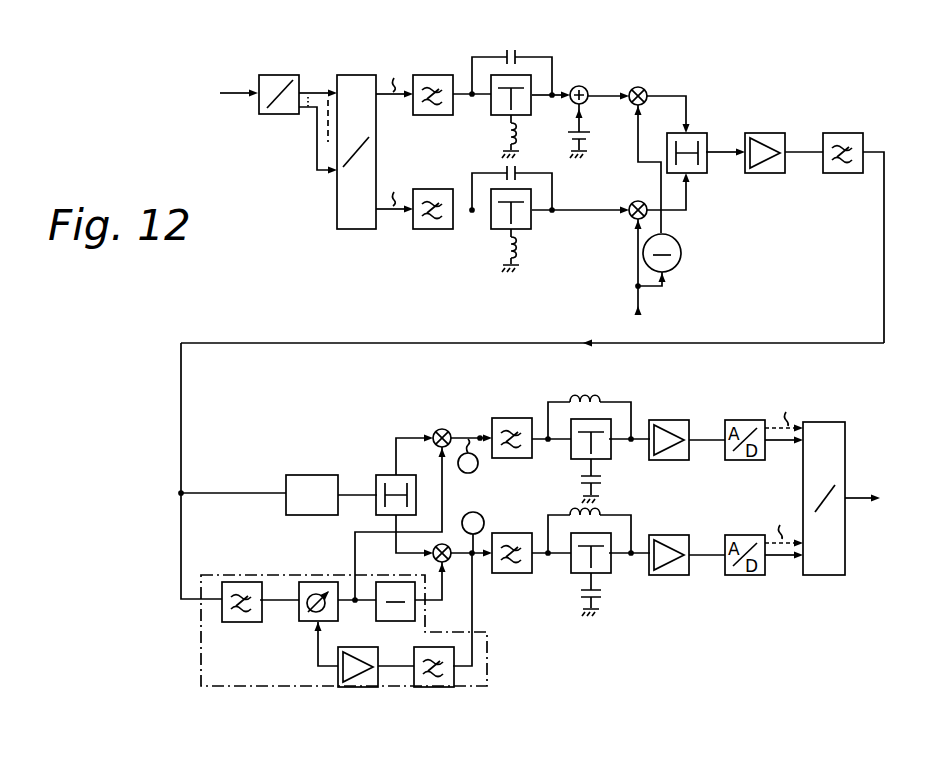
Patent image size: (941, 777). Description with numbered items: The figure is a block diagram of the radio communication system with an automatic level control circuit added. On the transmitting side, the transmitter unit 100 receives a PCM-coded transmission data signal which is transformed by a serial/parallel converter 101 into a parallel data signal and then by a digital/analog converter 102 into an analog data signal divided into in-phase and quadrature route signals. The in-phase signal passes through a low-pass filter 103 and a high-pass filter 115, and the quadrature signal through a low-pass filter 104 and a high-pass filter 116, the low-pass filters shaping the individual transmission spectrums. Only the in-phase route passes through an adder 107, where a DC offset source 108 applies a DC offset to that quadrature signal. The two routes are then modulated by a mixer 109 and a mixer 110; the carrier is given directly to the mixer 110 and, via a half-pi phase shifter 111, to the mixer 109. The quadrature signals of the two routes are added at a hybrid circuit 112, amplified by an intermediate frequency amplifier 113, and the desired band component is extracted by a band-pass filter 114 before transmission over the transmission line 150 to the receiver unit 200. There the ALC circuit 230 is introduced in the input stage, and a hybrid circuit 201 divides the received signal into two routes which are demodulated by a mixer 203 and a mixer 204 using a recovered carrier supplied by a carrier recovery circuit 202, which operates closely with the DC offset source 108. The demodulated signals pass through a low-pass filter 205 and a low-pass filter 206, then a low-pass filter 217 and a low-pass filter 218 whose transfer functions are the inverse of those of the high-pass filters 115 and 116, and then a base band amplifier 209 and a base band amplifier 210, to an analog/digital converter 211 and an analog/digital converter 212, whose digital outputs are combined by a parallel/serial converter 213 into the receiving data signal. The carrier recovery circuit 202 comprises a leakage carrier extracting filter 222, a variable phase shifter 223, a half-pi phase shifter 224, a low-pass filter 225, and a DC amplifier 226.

The transmitter unit 100 is at (521, 28).
The serial/parallel converter 101 is at (282, 75).
The digital/analog converter 102 is at (358, 75).
The low-pass filter 103 is at (437, 75).
The low-pass filter 104 is at (436, 231).
The adder 107 is at (585, 86).
The DC offset source 108 is at (568, 137).
The mixer 109 is at (638, 86).
The mixer 110 is at (633, 219).
The π/2 phase shifter 111 is at (682, 253).
The hybrid circuit 112 is at (702, 133).
The intermediate frequency amplifier 113 is at (772, 133).
The band-pass filter 114 is at (845, 133).
The high-pass filter 115 is at (539, 78).
The high-pass filter 116 is at (540, 198).
The transmission line 150 is at (477, 343).
The receiver unit 200 is at (578, 370).
The hybrid circuit 201 is at (382, 475).
The carrier recovery circuit 202 is at (200, 640).
The mixer 203 is at (442, 430).
The mixer 204 is at (448, 543).
The low-pass filter 205 is at (513, 418).
The low-pass filter 206 is at (512, 575).
The base band amplifier 209 is at (672, 420).
The base band amplifier 210 is at (672, 575).
The analog/digital converter 211 is at (741, 420).
The analog/digital converter 212 is at (747, 575).
The parallel/serial converter 213 is at (828, 422).
The low-pass filter 217 is at (612, 415).
The low-pass filter 218 is at (615, 542).
The leakage carrier extracting filter 222 is at (241, 577).
The variable phase shifter 223 is at (319, 577).
The π/2 phase shifter 224 is at (424, 613).
The low-pass filter 225 is at (440, 688).
The DC amplifier 226 is at (368, 688).
The ALC circuit 230 is at (308, 475).